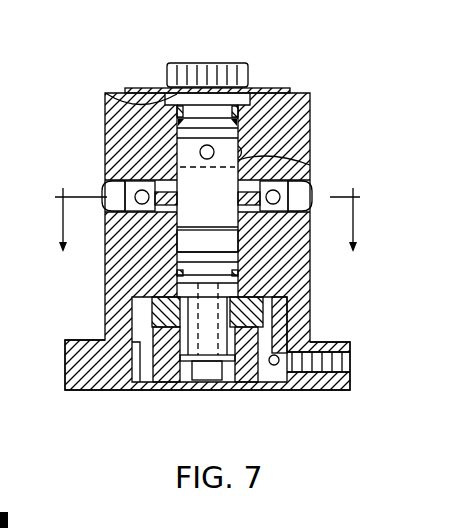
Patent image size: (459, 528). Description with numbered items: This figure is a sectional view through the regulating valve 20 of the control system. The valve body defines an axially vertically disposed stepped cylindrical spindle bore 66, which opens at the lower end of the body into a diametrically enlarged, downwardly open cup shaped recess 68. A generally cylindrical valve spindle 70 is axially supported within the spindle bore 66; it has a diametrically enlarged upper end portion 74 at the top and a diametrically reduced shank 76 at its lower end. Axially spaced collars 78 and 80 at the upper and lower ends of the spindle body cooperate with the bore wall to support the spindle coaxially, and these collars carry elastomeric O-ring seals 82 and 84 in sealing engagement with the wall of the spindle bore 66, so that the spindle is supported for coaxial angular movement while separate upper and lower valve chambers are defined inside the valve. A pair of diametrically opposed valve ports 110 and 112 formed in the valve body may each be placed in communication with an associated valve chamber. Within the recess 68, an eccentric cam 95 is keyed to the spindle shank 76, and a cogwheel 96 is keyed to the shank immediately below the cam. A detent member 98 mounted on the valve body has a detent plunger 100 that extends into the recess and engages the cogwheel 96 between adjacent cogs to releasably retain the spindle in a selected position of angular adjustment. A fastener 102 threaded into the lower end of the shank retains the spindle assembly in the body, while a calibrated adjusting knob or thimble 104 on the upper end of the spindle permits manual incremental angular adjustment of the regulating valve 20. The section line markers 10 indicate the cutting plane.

The regulating valve 20 is at (302, 72).
The calibrated adjusting knob or thimble 104 is at (220, 62).
The upper end portion 74 is at (123, 97).
The collar 78 is at (172, 110).
The O-ring seal 82 is at (250, 120).
The spindle bore 66 is at (240, 160).
The valve port 110 is at (103, 184).
The valve port 112 is at (312, 188).
The section line 10 is at (210, 214).
The valve spindle 70 is at (197, 245).
The collar 80 is at (177, 270).
The O-ring seal 84 is at (240, 266).
The eccentric cam 95 is at (265, 312).
The cup shaped recess 68 is at (132, 373).
The cogwheel 96 is at (167, 375).
The shank 76 is at (237, 337).
The fastener 102 is at (210, 372).
The detent plunger 100 is at (279, 365).
The detent member 98 is at (302, 385).